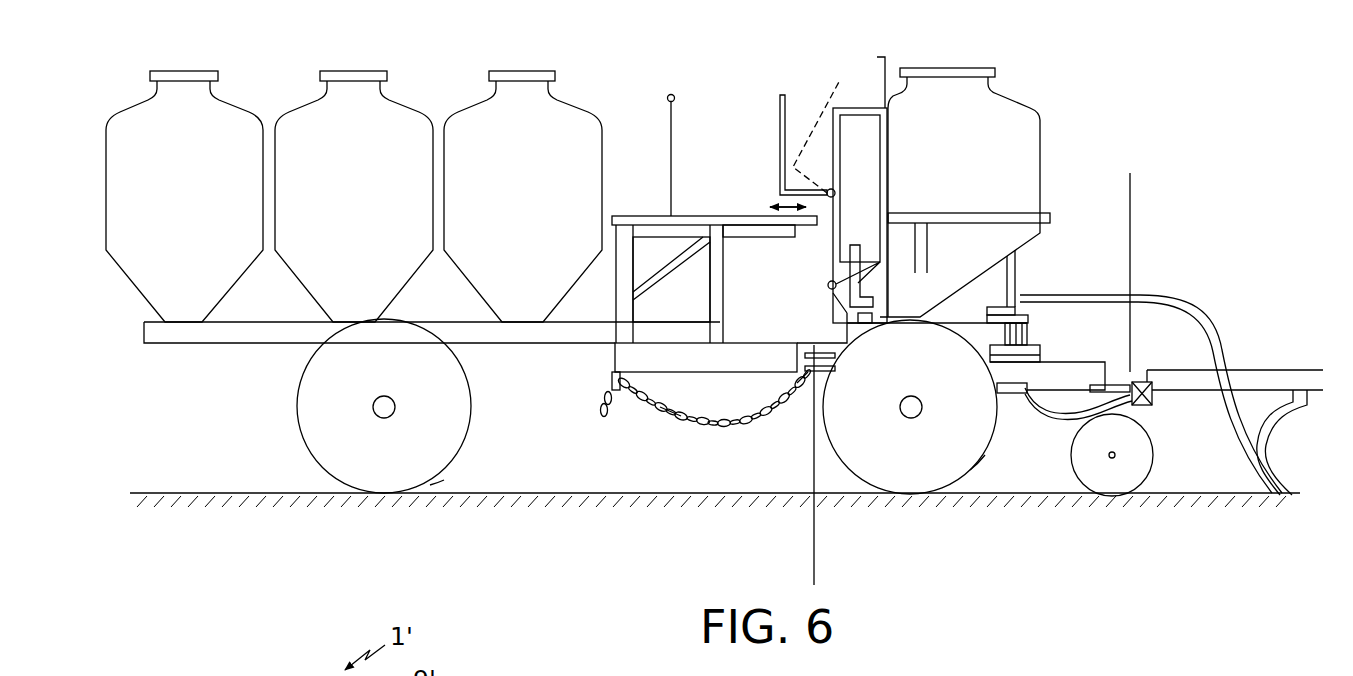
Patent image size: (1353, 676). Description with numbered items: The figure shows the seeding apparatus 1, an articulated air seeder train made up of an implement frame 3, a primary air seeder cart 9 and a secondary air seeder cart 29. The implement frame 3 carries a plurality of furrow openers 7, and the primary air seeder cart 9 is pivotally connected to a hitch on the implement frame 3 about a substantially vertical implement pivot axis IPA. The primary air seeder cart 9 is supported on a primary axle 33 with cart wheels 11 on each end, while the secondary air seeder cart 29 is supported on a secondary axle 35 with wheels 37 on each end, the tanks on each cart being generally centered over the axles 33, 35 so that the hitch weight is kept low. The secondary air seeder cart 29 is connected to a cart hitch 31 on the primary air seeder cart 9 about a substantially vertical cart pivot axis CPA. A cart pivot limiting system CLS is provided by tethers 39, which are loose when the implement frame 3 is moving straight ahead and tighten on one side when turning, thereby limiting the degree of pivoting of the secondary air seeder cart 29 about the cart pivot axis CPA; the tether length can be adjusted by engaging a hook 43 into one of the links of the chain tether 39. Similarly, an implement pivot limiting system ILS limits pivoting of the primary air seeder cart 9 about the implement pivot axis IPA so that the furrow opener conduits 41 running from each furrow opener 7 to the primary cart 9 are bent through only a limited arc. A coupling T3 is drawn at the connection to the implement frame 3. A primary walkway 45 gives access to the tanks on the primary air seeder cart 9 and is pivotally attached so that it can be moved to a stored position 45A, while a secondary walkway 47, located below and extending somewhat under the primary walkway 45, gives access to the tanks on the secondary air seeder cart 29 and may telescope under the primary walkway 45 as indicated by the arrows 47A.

The seeding apparatus 1 is at (628, 69).
The implement frame 3 is at (1190, 370).
The furrow opener 7 is at (1267, 450).
The primary air seeder cart 9 is at (1040, 125).
The cart wheel 11 is at (977, 465).
The secondary air seeder cart 29 is at (237, 345).
The cart hitch 31 is at (793, 380).
The primary axle 33 is at (920, 415).
The secondary axle 35 is at (373, 407).
The wheel 37 is at (435, 478).
The tether 39 is at (710, 430).
The furrow opener conduit 41 is at (1180, 313).
The hook 43 is at (612, 372).
The primary walkway 45 is at (803, 193).
The stored position 45A is at (813, 120).
The secondary walkway 47 is at (692, 215).
The arrows 47A is at (788, 210).
The cart pivot axis CPA is at (815, 565).
The cart pivot limiting system CLS is at (675, 415).
The implement pivot limiting system ILS is at (1040, 413).
The implement pivot axis IPA is at (1132, 215).
The hitch coupling T3 is at (1153, 410).